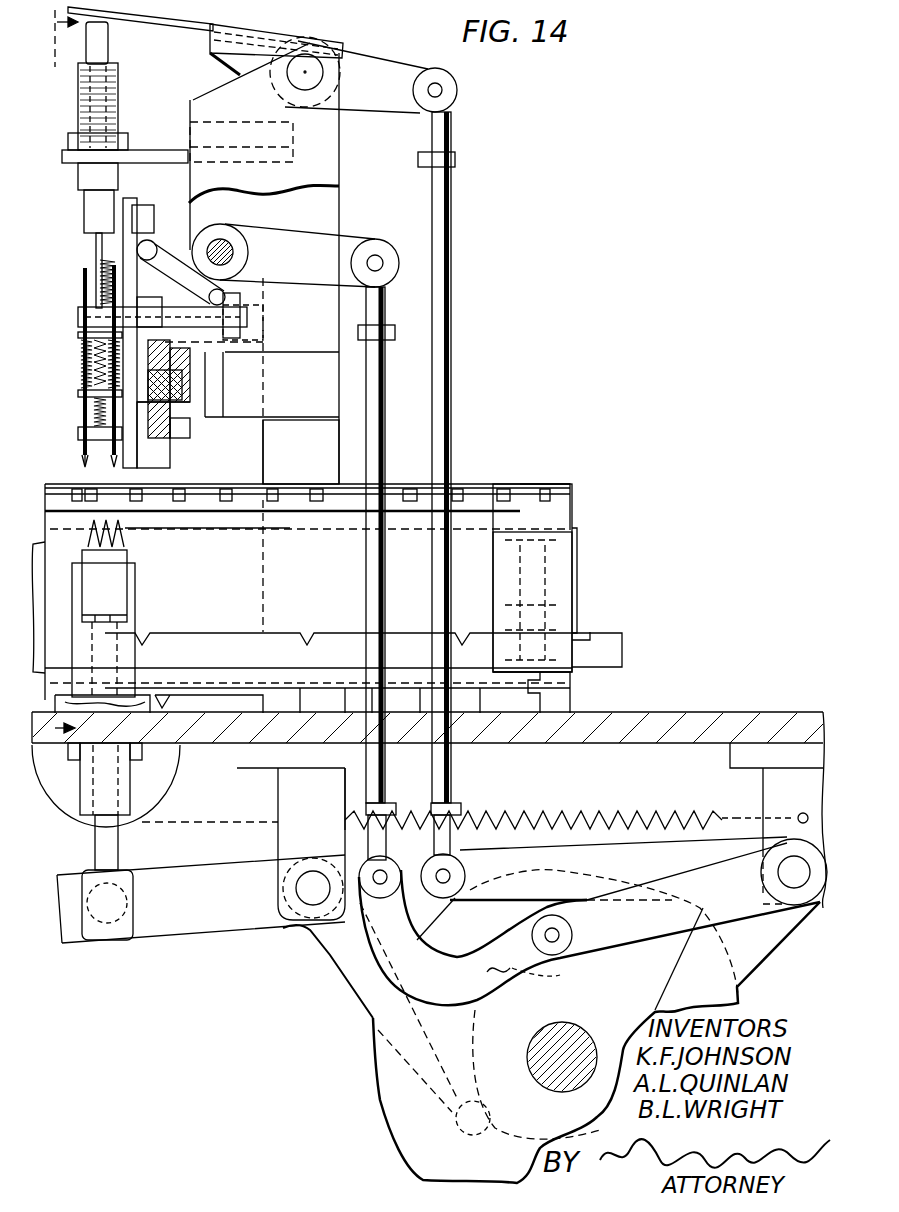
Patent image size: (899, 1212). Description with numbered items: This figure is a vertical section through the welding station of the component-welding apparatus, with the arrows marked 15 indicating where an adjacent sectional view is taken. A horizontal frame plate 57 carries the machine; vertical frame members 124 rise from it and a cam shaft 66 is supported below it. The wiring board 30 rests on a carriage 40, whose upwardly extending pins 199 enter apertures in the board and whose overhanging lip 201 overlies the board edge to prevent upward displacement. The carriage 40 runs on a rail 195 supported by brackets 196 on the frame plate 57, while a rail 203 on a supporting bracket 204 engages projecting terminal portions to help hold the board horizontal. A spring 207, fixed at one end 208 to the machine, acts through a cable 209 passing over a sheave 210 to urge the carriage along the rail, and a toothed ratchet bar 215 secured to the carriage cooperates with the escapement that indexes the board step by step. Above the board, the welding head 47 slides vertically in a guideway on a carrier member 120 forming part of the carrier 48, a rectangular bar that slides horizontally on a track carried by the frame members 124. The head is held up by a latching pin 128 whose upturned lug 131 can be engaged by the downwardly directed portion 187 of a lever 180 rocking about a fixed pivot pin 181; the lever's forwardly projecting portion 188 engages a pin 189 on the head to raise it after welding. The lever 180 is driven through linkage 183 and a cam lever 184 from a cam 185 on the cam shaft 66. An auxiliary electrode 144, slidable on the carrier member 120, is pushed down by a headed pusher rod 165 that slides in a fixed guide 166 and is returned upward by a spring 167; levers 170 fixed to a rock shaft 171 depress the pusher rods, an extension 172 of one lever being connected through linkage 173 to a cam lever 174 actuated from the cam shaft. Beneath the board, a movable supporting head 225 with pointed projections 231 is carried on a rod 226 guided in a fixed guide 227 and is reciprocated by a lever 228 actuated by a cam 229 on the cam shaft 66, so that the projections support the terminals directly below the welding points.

The section line 15- 15 is at (50, 386).
The levers 170 is at (128, 22).
The headed pusher rods 165 is at (100, 48).
The fixed guides 166 is at (80, 120).
The springs 167 is at (118, 104).
The extension 172 is at (385, 56).
The rock shaft 171 is at (310, 82).
The linkage 173 is at (450, 245).
The pin 189 is at (143, 210).
The fixed pivot pin 181 is at (200, 245).
The lever 180 is at (292, 245).
The welding head 47 is at (75, 318).
The forwardly projecting portion 188 is at (150, 262).
The downwardly directed portion 187 is at (240, 300).
The upwardly directed lug 131 is at (245, 312).
The latching pin 128 is at (250, 342).
The linkage 183 is at (375, 385).
The carrier 48 is at (168, 420).
The carrier members 120 is at (150, 460).
The vertical frame members 124 is at (318, 455).
The auxiliary electrodes 144 is at (95, 462).
The pins 199 is at (80, 486).
The wiring board 30 is at (470, 484).
The overhanging lip 201 is at (528, 482).
The carriage 40 is at (572, 503).
The pointed projections 231 is at (98, 550).
The rail 203 is at (247, 510).
The movable supporting head 225 is at (108, 582).
The rail 195 is at (475, 580).
The fixed guide 227 is at (118, 640).
The supporting bracket 204 is at (140, 668).
The toothed ratchet bar 215 is at (295, 648).
The cable 209 is at (228, 685).
The brackets 196 is at (580, 697).
The horizontal frame plate 57 is at (685, 712).
The cam lever 174 is at (513, 863).
The spring 207 is at (615, 815).
The fixed end 208 is at (740, 816).
The sheave 210 is at (67, 790).
The rod 226 is at (104, 853).
The lever 228 is at (205, 905).
The cam lever 184 is at (613, 937).
The cam 185 is at (530, 975).
The cam shaft 66 is at (577, 1043).
The cam 229 is at (500, 1127).